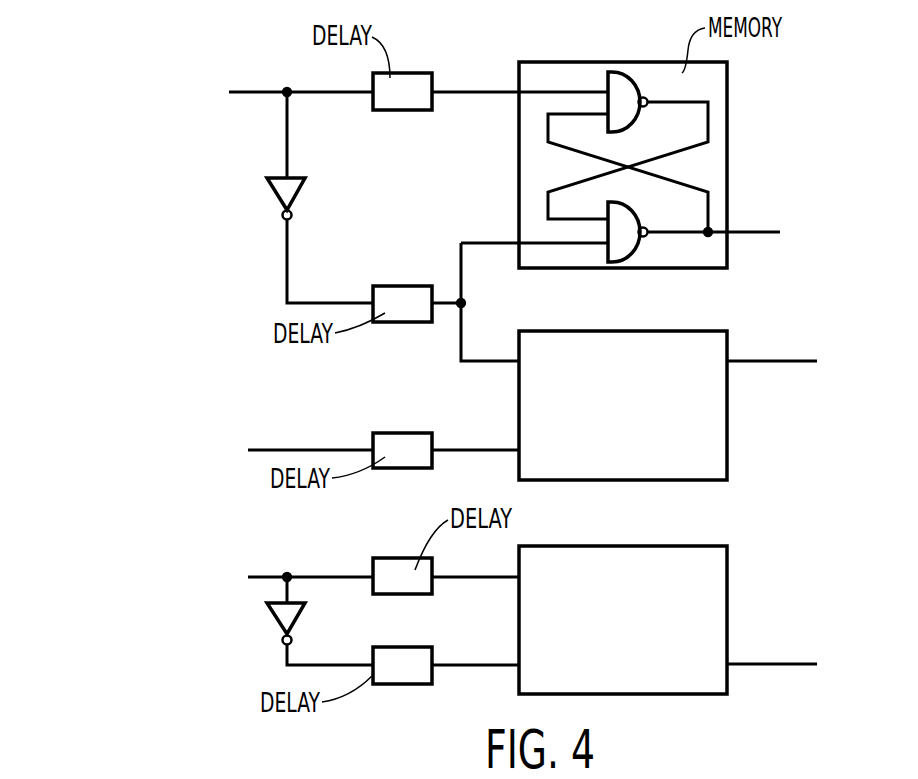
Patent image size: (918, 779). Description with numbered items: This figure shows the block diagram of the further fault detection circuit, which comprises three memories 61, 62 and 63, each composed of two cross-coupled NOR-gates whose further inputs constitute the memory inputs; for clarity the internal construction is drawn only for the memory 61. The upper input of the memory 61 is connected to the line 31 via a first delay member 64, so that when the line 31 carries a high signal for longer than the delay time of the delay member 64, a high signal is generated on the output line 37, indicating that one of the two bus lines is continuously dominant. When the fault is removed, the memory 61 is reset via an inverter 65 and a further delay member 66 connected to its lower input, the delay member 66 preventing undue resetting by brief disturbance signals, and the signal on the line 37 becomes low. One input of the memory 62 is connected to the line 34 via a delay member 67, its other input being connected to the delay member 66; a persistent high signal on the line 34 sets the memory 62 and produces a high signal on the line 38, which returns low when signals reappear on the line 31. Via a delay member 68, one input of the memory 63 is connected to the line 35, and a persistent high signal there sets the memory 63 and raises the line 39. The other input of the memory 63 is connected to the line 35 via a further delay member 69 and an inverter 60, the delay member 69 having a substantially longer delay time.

The line 31 is at (248, 94).
The line 34 is at (310, 448).
The line 35 is at (258, 575).
The output line 37 is at (753, 227).
The line 38 is at (780, 362).
The line 39 is at (787, 662).
The inverter 60 is at (297, 627).
The memory 61 is at (727, 178).
The memory 62 is at (727, 427).
The memory 63 is at (727, 585).
The first delay member 64 is at (398, 110).
The inverter 65 is at (300, 198).
The further delay member 66 is at (393, 286).
The delay member 67 is at (411, 432).
The delay member 68 is at (392, 556).
The further delay member 69 is at (405, 645).